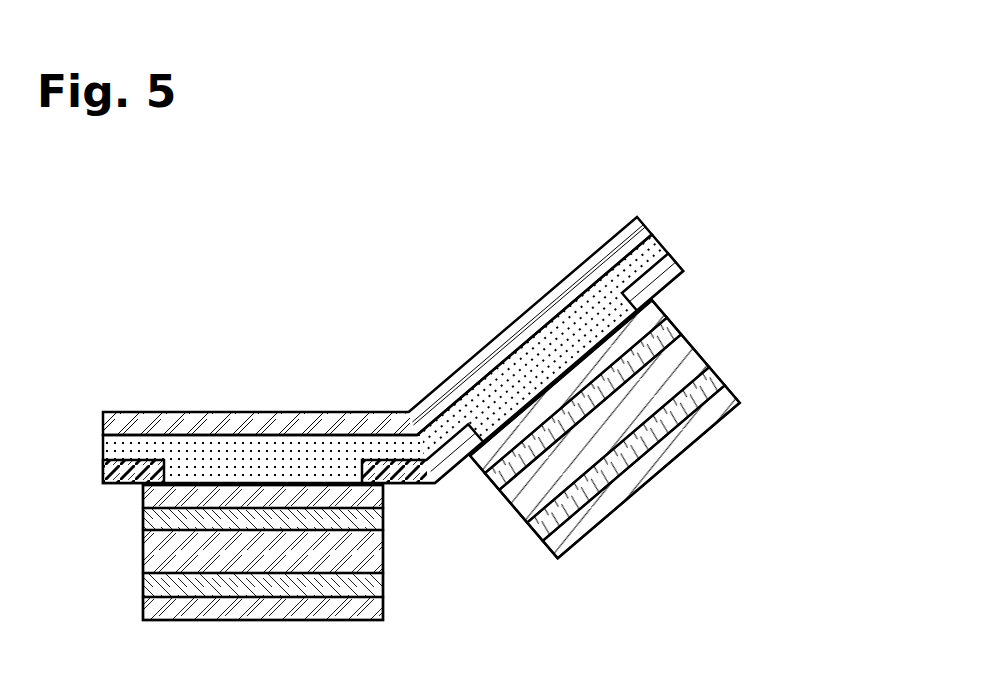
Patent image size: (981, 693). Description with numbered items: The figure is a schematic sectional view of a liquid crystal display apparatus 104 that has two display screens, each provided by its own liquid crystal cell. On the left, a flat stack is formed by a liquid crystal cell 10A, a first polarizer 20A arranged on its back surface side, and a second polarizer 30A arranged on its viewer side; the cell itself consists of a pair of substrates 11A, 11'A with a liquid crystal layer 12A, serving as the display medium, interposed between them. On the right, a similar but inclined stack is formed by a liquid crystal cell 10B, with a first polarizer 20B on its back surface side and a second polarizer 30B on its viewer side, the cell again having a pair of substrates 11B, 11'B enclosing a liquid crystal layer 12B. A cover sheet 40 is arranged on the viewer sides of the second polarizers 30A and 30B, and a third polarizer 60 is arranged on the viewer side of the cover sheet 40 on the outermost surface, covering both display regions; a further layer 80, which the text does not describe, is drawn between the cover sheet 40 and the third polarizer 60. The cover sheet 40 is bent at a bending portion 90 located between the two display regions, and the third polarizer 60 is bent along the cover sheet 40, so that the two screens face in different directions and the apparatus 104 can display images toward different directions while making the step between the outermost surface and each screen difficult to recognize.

The liquid crystal display apparatus 104 is at (505, 157).
The bending portion 90 is at (400, 384).
The third polarizer 60 is at (647, 224).
The adhesive / filler layer 80 is at (666, 246).
The cover sheet 40 is at (679, 263).
The second polarizer 30A is at (143, 491).
The liquid crystal cell 10A is at (198, 555).
The substrate 11A is at (143, 516).
The liquid crystal layer 12A is at (143, 552).
The substrate 11'A is at (222, 586).
The first polarizer 20A is at (143, 607).
The second polarizer 30B is at (665, 303).
The liquid crystal cell 10B is at (654, 415).
The substrate 11B is at (676, 323).
The liquid crystal layer 12B is at (691, 348).
The substrate 11'B is at (664, 442).
The first polarizer 20B is at (733, 389).